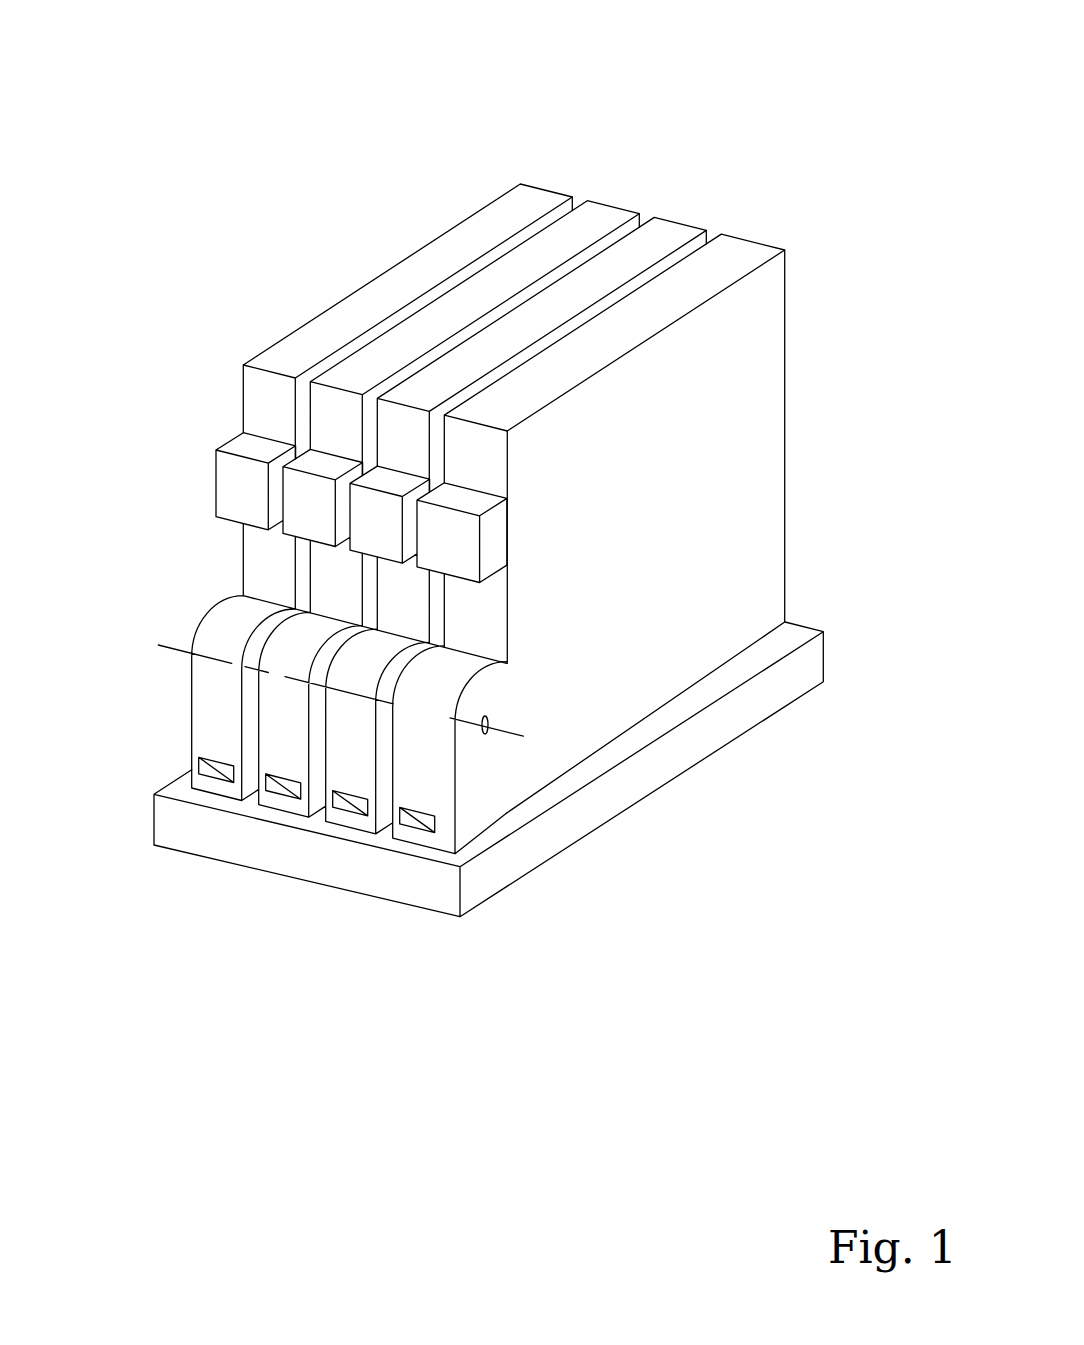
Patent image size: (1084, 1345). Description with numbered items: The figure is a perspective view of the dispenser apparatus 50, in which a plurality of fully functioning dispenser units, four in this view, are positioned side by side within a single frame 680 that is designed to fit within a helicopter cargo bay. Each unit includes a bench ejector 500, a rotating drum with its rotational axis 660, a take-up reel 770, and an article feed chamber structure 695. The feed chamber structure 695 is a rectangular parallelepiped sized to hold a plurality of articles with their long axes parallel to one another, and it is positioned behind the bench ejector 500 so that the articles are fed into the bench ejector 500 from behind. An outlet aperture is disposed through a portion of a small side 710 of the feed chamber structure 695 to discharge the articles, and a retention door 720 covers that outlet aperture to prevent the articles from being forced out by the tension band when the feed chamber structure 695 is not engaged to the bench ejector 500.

The dispenser apparatus 50 is at (800, 75).
The small side 710 is at (260, 405).
The retention door 720 is at (263, 567).
The take-up reel 770 is at (235, 490).
The rotational axis 660 is at (173, 645).
The frame 680 is at (483, 815).
The feed chamber structure 695 is at (692, 510).
The bench ejector 500 is at (432, 822).